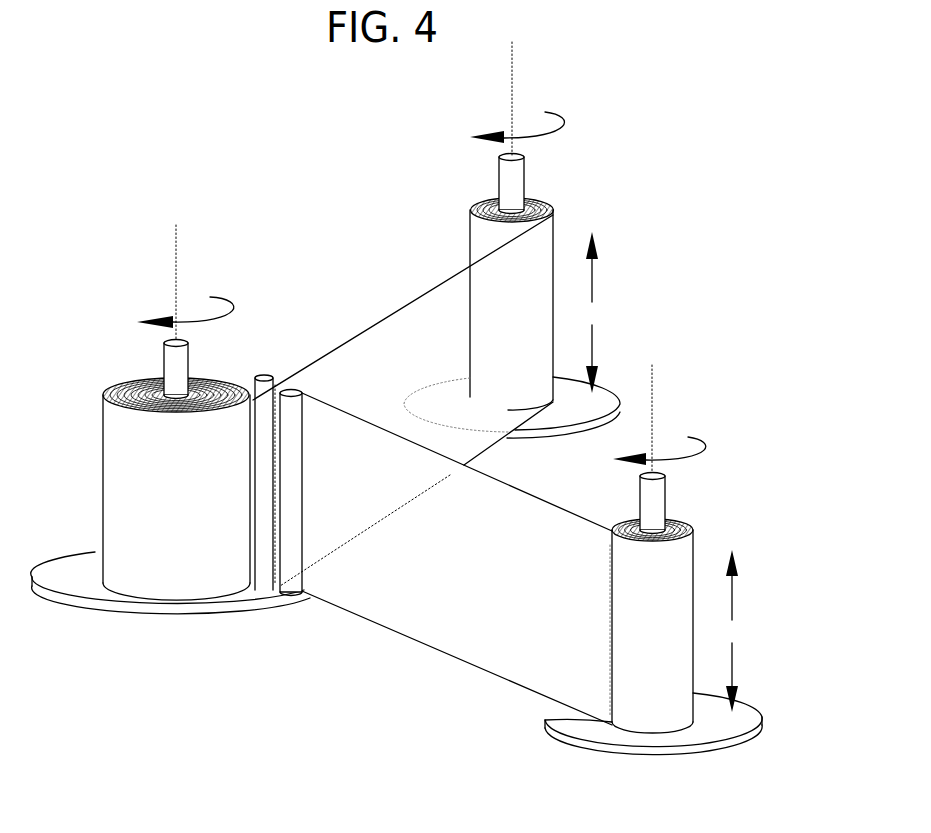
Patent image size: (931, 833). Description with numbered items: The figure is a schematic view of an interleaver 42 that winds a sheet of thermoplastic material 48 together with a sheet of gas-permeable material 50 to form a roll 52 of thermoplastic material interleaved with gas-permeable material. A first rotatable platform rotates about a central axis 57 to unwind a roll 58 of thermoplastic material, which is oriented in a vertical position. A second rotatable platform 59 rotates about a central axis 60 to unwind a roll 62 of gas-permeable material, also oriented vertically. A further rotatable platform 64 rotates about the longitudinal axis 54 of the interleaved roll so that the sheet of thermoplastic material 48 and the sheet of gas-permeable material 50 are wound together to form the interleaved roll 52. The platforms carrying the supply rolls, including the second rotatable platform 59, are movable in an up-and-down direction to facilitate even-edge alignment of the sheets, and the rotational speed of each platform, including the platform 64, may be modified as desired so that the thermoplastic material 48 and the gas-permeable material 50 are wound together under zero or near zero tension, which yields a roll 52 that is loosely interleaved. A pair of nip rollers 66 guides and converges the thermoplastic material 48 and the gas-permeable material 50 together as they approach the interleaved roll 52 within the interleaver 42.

The interleaver 42 is at (290, 122).
The sheet of thermoplastic material 48 is at (402, 301).
The sheet of gas-permeable material 50 is at (463, 662).
The interleaved roll 52 is at (103, 436).
The longitudinal axis of interleaved roll 54 is at (177, 263).
The central axis of first rotatable platform 57 is at (510, 83).
The roll of thermoplastic material 58 is at (470, 228).
The second rotatable platform 59 is at (603, 398).
The central axis of second rotatable platform 60 is at (654, 386).
The roll of gas-permeable material 62 is at (695, 529).
The rotatable platform 64 is at (72, 563).
The nip rollers 66 is at (266, 378).